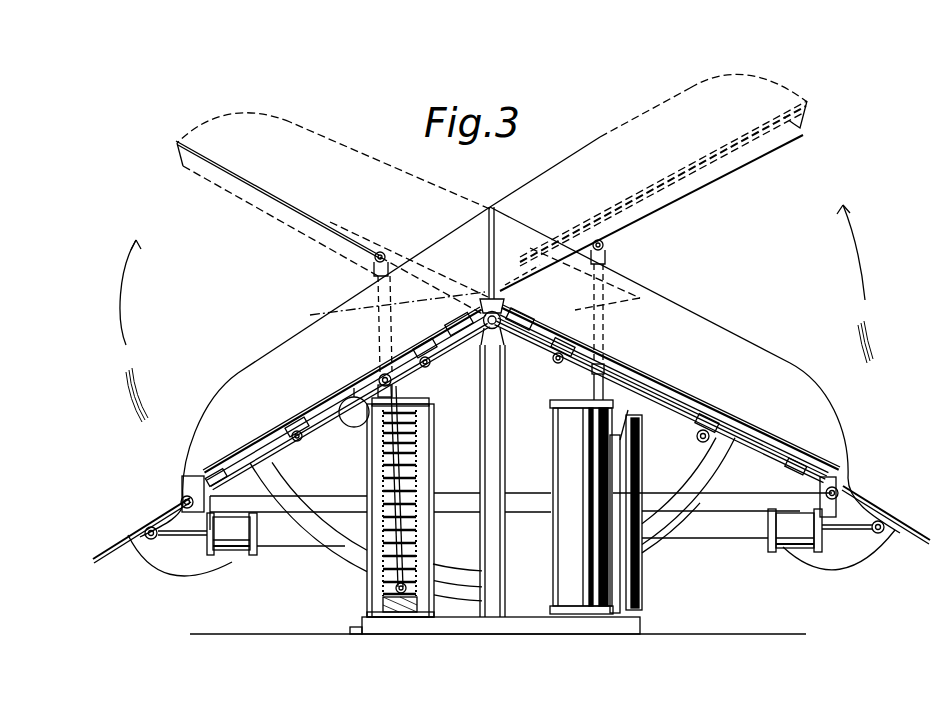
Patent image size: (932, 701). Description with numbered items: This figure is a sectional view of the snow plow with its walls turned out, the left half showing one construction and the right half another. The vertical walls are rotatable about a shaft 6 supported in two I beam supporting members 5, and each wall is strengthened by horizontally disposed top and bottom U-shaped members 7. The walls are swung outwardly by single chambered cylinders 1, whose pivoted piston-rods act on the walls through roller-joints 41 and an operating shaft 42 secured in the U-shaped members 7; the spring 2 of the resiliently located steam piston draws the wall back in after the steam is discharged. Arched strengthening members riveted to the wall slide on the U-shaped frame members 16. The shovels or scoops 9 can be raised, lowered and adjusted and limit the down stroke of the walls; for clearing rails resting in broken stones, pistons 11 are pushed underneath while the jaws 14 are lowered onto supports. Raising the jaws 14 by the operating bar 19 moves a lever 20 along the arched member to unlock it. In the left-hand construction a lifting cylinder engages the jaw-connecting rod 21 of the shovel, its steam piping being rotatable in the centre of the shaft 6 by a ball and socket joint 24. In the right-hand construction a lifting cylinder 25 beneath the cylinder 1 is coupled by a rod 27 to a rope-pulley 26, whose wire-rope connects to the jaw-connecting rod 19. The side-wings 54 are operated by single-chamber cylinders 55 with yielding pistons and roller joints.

The single chambered cylinder 1 is at (430, 483).
The spring 2 is at (405, 433).
The I beam supporting member 5 is at (507, 330).
The shaft 6 is at (518, 314).
The U-shaped member 7 is at (312, 430).
The shovel or scoop 9 is at (234, 384).
The piston 11 is at (216, 478).
The jaw 14 is at (424, 346).
The U-shaped frame member 16 is at (850, 498).
The operating bar 19 is at (668, 395).
The lever 20 is at (350, 400).
The jaw-connecting rod 21 is at (383, 374).
The ball and socket joint 24 is at (482, 330).
The lifting cylinder 25 is at (560, 458).
The rope-pulley 26 is at (640, 457).
The rod 27 is at (615, 440).
The roller-joint 41 is at (594, 384).
The operating shaft 42 is at (393, 392).
The side-wing 54 is at (101, 556).
The single-chamber cylinder 55 is at (241, 556).